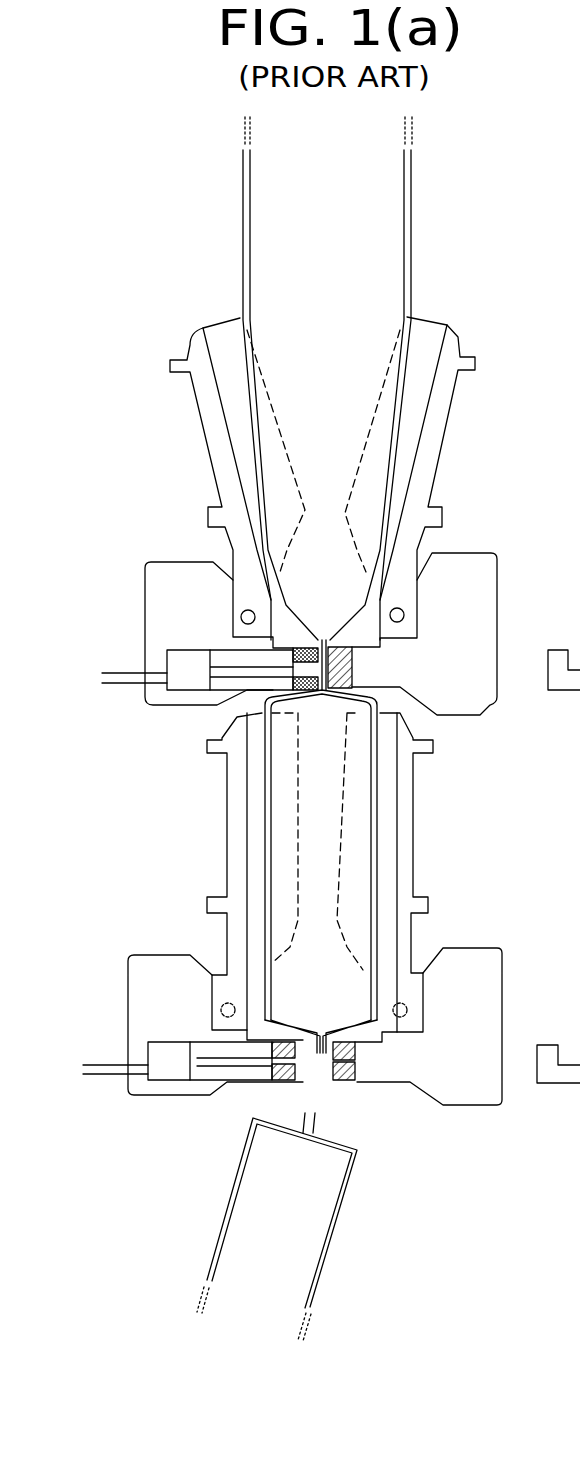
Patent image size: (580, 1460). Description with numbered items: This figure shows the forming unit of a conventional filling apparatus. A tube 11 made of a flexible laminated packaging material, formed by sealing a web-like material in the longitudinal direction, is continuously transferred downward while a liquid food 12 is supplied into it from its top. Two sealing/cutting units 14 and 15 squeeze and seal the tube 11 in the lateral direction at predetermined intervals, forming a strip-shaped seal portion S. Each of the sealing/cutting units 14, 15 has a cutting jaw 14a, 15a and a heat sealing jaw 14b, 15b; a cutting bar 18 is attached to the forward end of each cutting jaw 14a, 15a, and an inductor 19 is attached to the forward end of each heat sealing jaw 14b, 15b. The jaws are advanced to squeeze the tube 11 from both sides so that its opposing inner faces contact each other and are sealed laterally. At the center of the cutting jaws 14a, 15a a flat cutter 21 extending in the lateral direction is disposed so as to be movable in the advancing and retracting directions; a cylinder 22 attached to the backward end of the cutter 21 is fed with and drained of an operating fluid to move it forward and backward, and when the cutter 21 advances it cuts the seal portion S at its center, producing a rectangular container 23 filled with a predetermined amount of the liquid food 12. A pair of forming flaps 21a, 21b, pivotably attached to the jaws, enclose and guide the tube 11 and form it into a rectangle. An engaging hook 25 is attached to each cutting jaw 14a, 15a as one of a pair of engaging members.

The tube 11 is at (413, 195).
The liquid food 12 is at (380, 257).
The forming flap 21a is at (192, 337).
The forming flap 21b is at (458, 337).
The sealing/cutting unit 14 is at (320, 596).
The cutting jaw 14a is at (145, 590).
The heat sealing jaw 14b is at (498, 592).
The cutting bar 18 is at (280, 592).
The inductor 19 is at (355, 663).
The seal portion S is at (325, 637).
The cylinder 22 is at (183, 647).
The flat cutter 21 is at (243, 700).
The sealing/cutting unit 15 is at (311, 973).
The cutting jaw 15a is at (128, 975).
The heat sealing jaw 15b is at (503, 985).
The rectangular container 23 is at (343, 1208).
The engaging hook 25 is at (573, 1087).